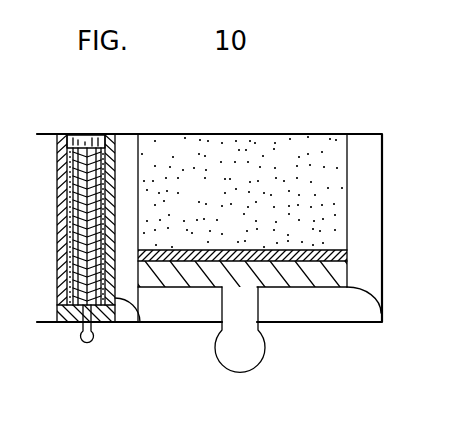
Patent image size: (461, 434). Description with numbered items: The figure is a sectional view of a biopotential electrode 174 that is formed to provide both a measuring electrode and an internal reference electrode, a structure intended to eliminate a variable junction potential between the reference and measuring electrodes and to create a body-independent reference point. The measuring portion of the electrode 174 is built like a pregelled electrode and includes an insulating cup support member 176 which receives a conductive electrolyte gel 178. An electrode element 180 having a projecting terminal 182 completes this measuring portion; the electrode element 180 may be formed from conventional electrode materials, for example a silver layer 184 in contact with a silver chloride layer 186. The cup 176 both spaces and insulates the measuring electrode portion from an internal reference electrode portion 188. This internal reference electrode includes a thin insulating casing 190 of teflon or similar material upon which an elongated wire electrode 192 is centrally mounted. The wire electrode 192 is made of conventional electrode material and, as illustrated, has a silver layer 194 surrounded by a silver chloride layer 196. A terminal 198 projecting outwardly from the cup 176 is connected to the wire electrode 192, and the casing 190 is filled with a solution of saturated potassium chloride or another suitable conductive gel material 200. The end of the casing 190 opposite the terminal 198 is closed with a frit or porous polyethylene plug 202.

The electrode 174 is at (343, 114).
The insulating cup support member 176 is at (367, 185).
The conductive electrolyte gel 178 is at (282, 134).
The electrode element 180 is at (381, 308).
The projecting terminal 182 is at (248, 350).
The silver layer 184 is at (350, 272).
The silver chloride layer 186 is at (350, 256).
The internal reference electrode portion 188 is at (56, 282).
The insulating casing 190 is at (140, 323).
The wire electrode 192 is at (68, 166).
The silver layer 194 is at (115, 187).
The silver chloride layer 196 is at (103, 190).
The terminal 198 is at (87, 343).
The conductive gel material 200 is at (68, 200).
The porous polyethylene plug 202 is at (90, 135).